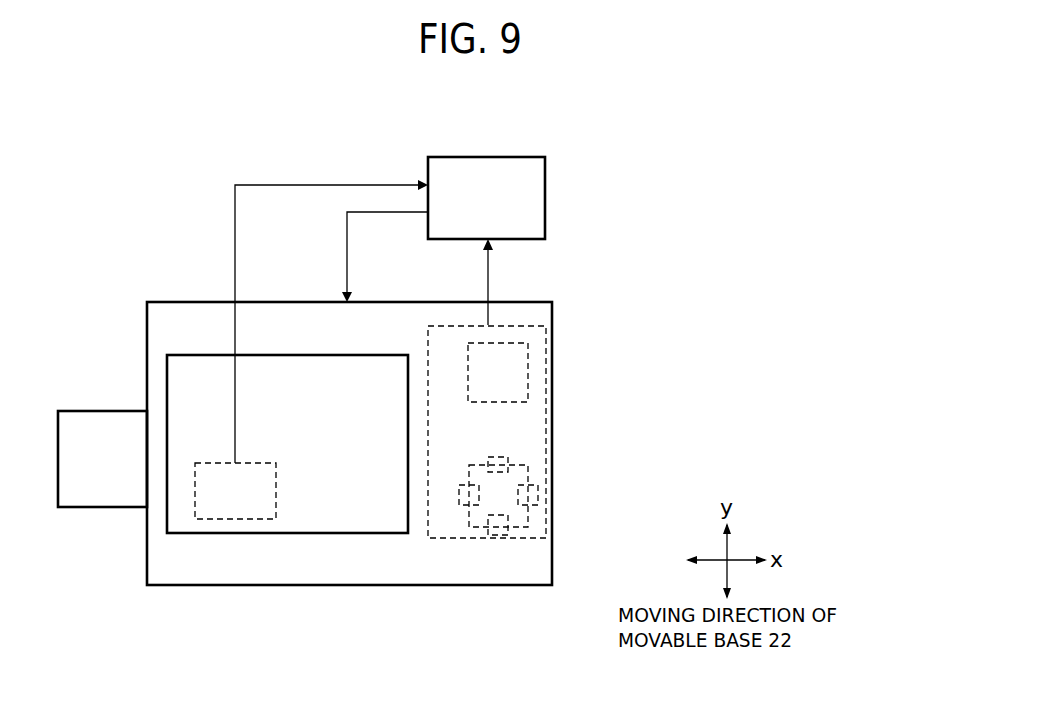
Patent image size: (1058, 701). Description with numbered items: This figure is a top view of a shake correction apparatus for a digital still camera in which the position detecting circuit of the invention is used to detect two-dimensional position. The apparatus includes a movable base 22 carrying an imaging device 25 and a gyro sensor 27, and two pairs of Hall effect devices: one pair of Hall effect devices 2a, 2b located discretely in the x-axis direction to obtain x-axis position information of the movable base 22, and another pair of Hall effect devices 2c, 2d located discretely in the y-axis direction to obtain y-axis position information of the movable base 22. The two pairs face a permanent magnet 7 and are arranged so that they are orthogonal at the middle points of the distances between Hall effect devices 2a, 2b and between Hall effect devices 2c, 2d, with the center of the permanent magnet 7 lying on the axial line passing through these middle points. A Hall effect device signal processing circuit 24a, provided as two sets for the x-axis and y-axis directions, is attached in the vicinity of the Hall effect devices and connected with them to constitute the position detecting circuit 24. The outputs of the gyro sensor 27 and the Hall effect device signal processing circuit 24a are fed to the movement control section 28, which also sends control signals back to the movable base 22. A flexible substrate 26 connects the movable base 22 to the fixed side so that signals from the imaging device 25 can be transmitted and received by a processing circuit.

The Hall effect device 2a is at (458, 490).
The Hall effect device 2b is at (540, 492).
The Hall effect device 2c is at (498, 457).
The Hall effect device 2d is at (494, 540).
The permanent magnet 7 is at (525, 474).
The movable base 22 is at (527, 302).
The position detecting circuit 24 is at (427, 338).
The Hall effect device signal processing circuit 24a is at (515, 376).
The imaging device 25 is at (185, 535).
The flexible substrate 26 is at (93, 420).
The gyro sensor 27 is at (278, 481).
The movement control section 28 is at (545, 196).